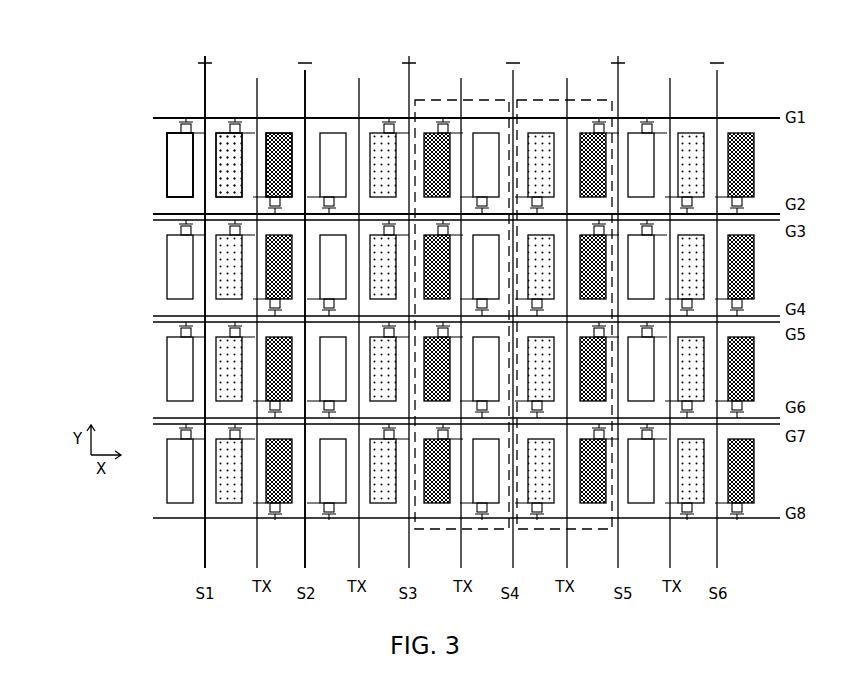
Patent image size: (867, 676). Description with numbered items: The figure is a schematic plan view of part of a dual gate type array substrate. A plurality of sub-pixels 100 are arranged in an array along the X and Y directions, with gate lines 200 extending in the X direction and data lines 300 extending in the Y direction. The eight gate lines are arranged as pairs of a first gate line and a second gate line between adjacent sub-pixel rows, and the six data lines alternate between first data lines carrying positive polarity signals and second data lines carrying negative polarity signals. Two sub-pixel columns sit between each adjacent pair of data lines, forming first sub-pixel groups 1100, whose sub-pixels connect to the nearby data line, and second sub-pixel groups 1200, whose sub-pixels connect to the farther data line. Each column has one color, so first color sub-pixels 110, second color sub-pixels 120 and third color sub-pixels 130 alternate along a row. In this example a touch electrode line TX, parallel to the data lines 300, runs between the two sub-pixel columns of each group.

The second color sub-pixel 120 is at (232, 160).
The third color sub-pixel 130 is at (291, 157).
The first sub-pixel group 1100 is at (557, 100).
The second sub-pixel group 1200 is at (440, 100).
The first color sub-pixel 110 is at (180, 165).
The sub-pixel 100 is at (180, 165).
The gate line 200 is at (466, 166).
The data line 300 is at (255, 312).